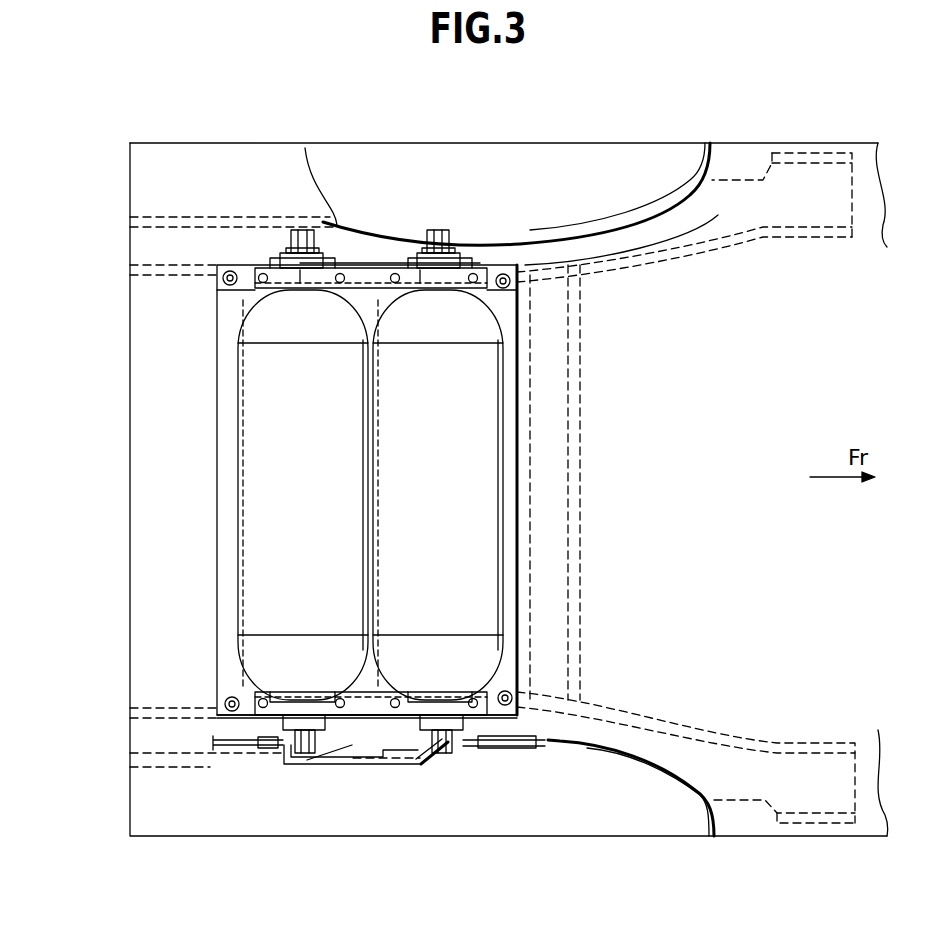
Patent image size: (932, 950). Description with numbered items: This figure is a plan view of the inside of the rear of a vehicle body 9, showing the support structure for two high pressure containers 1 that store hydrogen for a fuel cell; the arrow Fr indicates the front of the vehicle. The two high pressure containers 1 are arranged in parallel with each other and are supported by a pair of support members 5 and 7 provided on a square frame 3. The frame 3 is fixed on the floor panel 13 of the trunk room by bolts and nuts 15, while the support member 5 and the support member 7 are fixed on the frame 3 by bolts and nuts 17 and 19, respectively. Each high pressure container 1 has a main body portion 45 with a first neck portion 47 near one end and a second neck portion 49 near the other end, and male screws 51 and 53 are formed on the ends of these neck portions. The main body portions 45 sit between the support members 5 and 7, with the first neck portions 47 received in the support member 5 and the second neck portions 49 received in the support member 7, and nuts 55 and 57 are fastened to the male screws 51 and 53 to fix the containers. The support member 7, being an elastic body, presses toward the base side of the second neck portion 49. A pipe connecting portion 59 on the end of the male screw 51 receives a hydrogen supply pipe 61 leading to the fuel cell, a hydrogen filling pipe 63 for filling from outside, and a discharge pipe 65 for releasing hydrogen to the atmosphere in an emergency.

The high pressure container 1 is at (353, 495).
The frame 3 is at (228, 383).
The support member 5 is at (518, 717).
The support member 7 is at (525, 265).
The vehicle body 9 is at (200, 838).
The floor panel 13 is at (142, 493).
The bolts and nuts 15 is at (222, 280).
The bolts and nuts 17 is at (265, 697).
The bolts and nuts 19 is at (283, 255).
The main body portion 45 is at (253, 442).
The first neck portion 47 is at (437, 700).
The second neck portion 49 is at (440, 292).
The male screw 51 is at (325, 752).
The male screw 53 is at (325, 222).
The nut 55 is at (283, 747).
The nut 57 is at (300, 228).
The pipe connecting portion 59 is at (293, 758).
The hydrogen supply pipe 61 is at (392, 765).
The hydrogen filling pipe 63 is at (362, 762).
The discharge pipe 65 is at (217, 750).